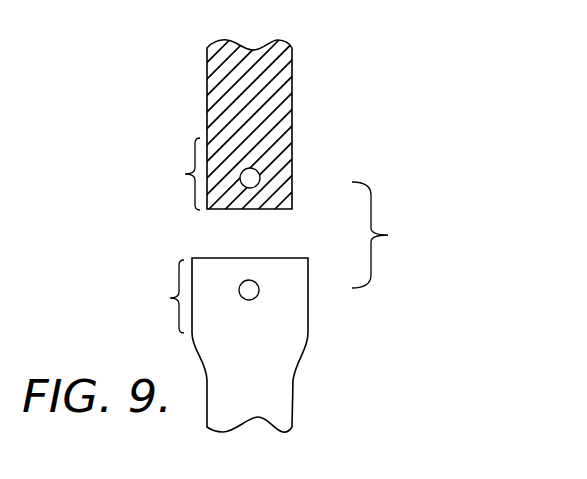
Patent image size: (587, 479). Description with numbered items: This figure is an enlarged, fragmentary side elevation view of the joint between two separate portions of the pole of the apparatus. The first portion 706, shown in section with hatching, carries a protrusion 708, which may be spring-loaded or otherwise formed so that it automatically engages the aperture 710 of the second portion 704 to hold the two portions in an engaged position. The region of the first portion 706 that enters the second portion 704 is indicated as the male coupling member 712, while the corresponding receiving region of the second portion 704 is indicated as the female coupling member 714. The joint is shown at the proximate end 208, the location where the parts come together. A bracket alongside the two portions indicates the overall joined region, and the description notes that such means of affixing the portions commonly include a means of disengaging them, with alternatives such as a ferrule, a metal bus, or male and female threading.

The first portion 706 is at (277, 85).
The protrusion 708 is at (250, 174).
The proximate end 208 is at (292, 209).
The male coupling member 712 is at (173, 174).
The second portion 704 is at (287, 352).
The aperture 710 is at (255, 295).
The female coupling member 714 is at (157, 296).